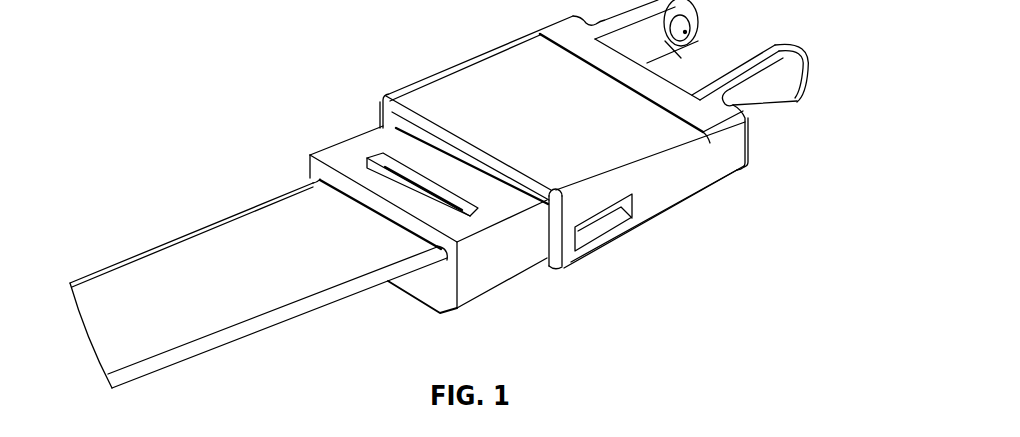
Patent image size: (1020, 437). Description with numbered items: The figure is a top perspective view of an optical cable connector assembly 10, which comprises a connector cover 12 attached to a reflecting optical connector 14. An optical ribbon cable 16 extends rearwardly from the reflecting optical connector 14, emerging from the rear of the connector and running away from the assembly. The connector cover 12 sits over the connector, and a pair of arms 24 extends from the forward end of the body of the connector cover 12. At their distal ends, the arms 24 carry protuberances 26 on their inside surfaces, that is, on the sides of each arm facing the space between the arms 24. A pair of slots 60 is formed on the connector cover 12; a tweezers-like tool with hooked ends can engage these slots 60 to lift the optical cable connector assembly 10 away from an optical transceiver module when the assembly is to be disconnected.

The optical cable connector assembly 10 is at (262, 71).
The connector cover 12 is at (466, 62).
The reflecting optical connector 14 is at (487, 284).
The optical ribbon cable 16 is at (311, 312).
The arms 24 is at (793, 100).
The protuberances 26 is at (689, 32).
The slots 60 is at (607, 224).